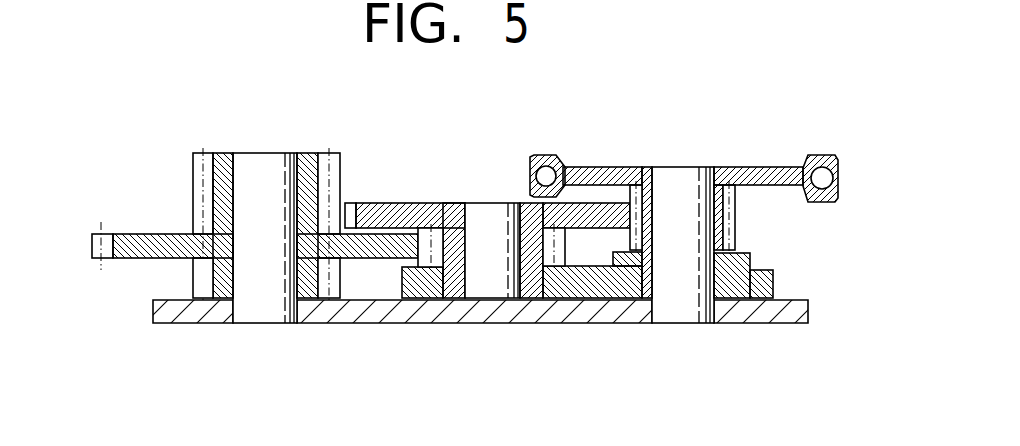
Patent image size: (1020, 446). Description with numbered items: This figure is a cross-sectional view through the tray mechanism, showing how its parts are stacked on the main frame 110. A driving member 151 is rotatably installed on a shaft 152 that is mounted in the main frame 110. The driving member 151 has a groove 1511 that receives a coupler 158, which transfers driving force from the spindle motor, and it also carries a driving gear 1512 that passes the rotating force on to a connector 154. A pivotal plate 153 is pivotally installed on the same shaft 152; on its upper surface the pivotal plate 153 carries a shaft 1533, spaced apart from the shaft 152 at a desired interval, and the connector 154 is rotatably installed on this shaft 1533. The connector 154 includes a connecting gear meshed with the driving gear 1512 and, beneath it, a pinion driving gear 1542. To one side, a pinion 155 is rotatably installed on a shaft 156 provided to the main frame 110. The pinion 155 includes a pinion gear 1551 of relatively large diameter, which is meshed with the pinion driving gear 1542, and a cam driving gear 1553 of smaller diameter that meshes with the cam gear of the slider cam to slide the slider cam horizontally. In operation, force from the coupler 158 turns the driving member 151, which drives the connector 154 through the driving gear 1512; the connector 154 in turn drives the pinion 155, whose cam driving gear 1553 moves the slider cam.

The main frame 110 is at (452, 323).
The driving member 151 is at (759, 166).
The groove 1511 is at (836, 153).
The driving gear 1512 is at (737, 222).
The shaft 152 is at (675, 206).
The pivotal plate 153 is at (762, 288).
The shaft 1533 is at (489, 216).
The connector 154 is at (400, 203).
The pinion driving gear 1542 is at (558, 262).
The pinion 155 is at (194, 153).
The pinion gear 1551 is at (95, 262).
The cam driving gear 1553 is at (194, 305).
The shaft 156 is at (260, 182).
The coupler 158 is at (832, 199).